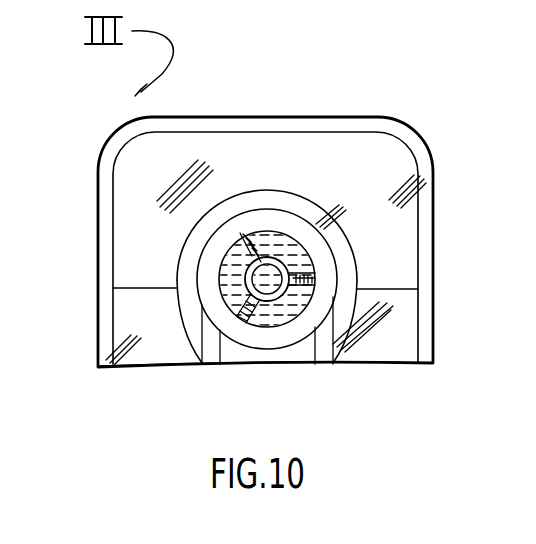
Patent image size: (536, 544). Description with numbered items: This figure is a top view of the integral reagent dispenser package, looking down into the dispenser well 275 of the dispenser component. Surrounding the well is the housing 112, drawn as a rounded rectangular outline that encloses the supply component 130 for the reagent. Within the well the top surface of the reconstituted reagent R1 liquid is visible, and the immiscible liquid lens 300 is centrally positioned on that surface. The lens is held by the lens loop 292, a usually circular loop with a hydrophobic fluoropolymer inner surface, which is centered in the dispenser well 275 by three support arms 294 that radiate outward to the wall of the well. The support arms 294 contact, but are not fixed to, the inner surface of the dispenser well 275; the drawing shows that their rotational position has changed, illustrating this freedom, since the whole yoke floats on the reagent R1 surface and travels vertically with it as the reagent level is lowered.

The reservoir housing 112 is at (97, 170).
The supply component 130 is at (290, 365).
The dispenser well 275 is at (215, 254).
The lens loop 292 is at (292, 270).
The support arms 294 is at (258, 232).
The immiscible liquid lens 300 is at (243, 304).
The reconstituted reagent liquid R1 is at (230, 288).